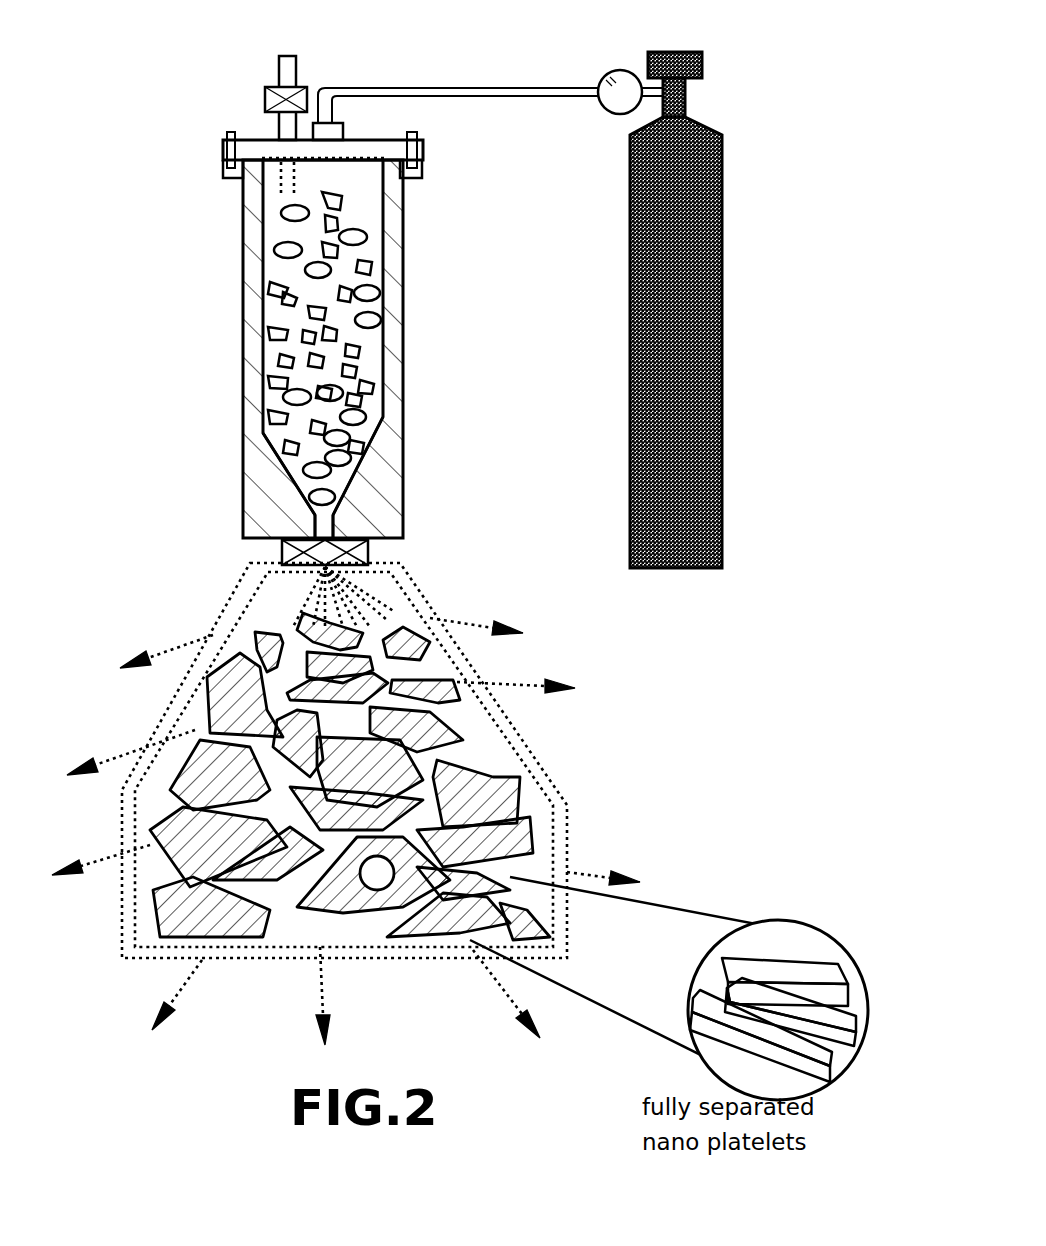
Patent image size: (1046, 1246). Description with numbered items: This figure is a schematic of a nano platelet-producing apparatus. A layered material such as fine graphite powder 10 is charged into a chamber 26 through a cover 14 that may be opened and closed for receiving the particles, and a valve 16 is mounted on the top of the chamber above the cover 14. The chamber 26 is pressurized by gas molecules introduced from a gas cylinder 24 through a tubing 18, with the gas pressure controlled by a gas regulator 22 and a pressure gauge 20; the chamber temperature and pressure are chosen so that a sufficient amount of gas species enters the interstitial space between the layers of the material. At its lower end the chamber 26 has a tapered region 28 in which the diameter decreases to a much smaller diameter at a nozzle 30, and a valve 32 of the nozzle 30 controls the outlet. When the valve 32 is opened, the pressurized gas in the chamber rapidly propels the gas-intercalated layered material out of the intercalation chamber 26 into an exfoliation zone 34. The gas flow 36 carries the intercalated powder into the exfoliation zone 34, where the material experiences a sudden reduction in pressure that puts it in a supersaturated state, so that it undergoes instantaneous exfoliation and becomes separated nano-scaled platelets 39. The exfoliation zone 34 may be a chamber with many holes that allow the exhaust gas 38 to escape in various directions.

The fine graphite powder 10 is at (353, 352).
The cover 14 is at (425, 160).
The valve 16 is at (270, 92).
The tubing 18 is at (360, 88).
The pressure gauge 20 is at (607, 75).
The gas regulator 22 is at (686, 52).
The gas cylinder 24 is at (630, 315).
The chamber 26 is at (404, 310).
The tapered region 28 is at (362, 475).
The nozzle 30 is at (332, 528).
The valve 32 is at (282, 552).
The exfoliation zone 34 is at (527, 752).
The gas flow 36 is at (368, 598).
The exhaust gas 38 is at (360, 845).
The separated nano-scaled platelets 39 is at (347, 890).